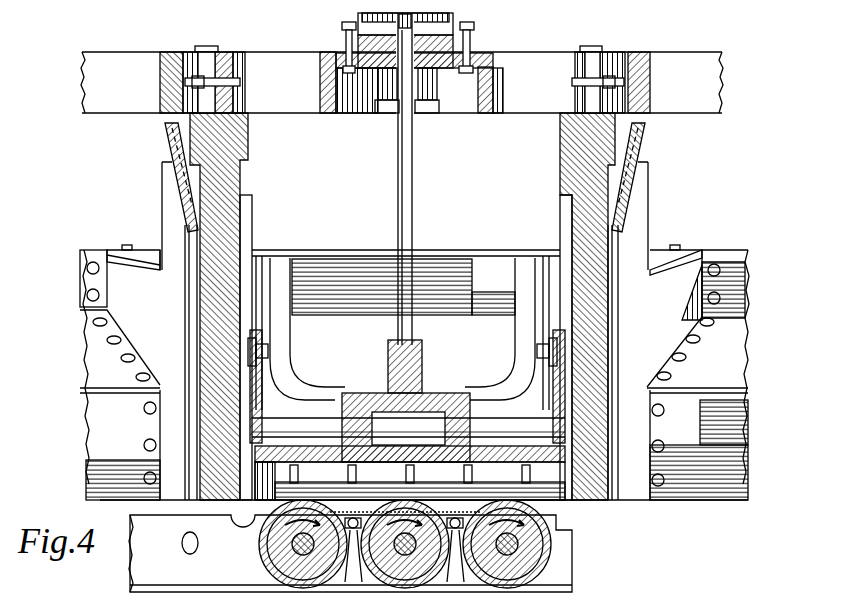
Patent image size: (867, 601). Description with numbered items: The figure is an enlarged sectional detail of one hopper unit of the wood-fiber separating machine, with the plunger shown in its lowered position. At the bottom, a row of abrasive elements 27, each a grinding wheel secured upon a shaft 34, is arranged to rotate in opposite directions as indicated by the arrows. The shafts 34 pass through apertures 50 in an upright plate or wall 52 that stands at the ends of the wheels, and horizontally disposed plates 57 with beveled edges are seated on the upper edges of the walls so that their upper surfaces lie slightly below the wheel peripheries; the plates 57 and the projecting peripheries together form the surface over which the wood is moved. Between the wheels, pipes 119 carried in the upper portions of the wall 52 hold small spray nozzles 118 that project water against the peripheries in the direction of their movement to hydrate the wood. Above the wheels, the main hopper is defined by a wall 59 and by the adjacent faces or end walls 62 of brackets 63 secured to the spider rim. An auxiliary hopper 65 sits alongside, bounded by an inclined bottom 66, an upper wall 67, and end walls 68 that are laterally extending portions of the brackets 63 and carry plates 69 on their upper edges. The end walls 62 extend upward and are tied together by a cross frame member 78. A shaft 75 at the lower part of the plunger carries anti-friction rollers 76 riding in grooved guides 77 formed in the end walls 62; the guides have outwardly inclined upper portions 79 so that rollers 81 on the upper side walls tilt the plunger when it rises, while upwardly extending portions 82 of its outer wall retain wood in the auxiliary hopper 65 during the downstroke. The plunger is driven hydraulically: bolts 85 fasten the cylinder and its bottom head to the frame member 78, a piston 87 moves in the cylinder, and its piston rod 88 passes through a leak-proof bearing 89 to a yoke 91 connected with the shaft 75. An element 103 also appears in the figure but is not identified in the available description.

The abrasive element 27 is at (270, 565).
The shaft 34 is at (292, 544).
The aperture 50 is at (182, 548).
The upright plate or wall 52 is at (575, 585).
The horizontally disposed plate 57 is at (356, 520).
The wall 59 is at (95, 425).
The end wall 62 is at (160, 205).
The bracket 63 is at (155, 190).
The auxiliary hopper 65 is at (72, 275).
The inclined bottom 66 is at (90, 342).
The upper wall 67 is at (85, 255).
The end wall 68 is at (120, 282).
The plate 69 is at (673, 253).
The shaft 75 is at (300, 420).
The anti-friction roller 76 is at (407, 386).
The grooved guide 77 is at (190, 327).
The frame member 78 is at (268, 60).
The inclined upper portion 79 is at (170, 152).
The roller 81 is at (258, 335).
The upwardly extending portion 82 is at (278, 265).
The bolt 85 is at (345, 24).
The piston 87 is at (455, 18).
The piston rod 88 is at (412, 212).
The leak-proof bearing 89 is at (425, 90).
The yoke 91 is at (458, 390).
The plate 103 is at (338, 430).
The spray nozzle 118 is at (396, 557).
The pipe 119 is at (397, 557).